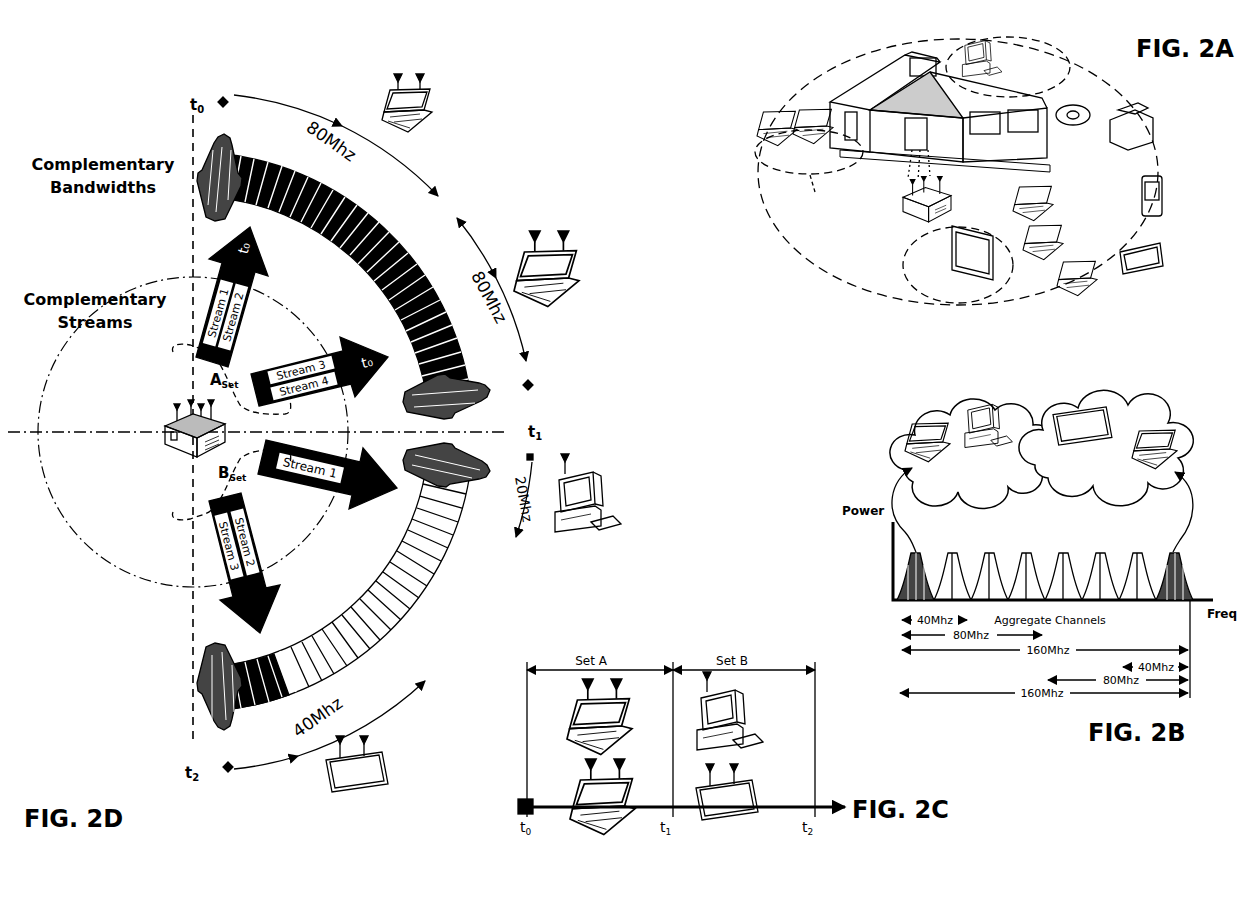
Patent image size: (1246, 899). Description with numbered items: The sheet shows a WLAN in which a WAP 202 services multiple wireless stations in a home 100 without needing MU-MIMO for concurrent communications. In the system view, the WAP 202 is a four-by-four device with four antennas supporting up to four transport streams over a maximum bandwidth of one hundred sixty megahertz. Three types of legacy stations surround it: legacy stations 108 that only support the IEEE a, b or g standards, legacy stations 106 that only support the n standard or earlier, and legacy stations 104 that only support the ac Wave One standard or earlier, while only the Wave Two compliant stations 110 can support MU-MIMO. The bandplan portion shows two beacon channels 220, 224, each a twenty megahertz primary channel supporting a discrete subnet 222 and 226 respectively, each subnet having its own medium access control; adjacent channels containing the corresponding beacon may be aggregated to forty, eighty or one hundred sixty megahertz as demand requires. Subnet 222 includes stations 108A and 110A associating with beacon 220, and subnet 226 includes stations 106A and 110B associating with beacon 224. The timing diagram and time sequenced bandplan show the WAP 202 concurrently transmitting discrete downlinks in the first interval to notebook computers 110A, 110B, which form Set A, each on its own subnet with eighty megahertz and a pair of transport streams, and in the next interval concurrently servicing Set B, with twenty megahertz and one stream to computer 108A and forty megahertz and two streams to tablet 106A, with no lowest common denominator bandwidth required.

In FIG. 2A, the home 100 is at (875, 80).
In FIG. 2A, the legacy stations (802.11ac Wave 1) 104 is at (903, 276).
In FIG. 2A, the legacy stations (802.11n) 106 is at (1160, 232).
In FIG. 2A, the legacy stations (802.11a/b/g) 108 is at (1070, 62).
In FIG. 2A, the stations (802.11ac Wave 2) 110 is at (785, 165).
In FIG. 2D, the WAP 202 is at (165, 425).
In FIG. 2A, the WAP 202 is at (910, 208).
In FIG. 2D, the beacon channel 220 is at (242, 132).
In FIG. 2B, the beacon channel 220 is at (916, 552).
In FIG. 2D, the beacon channel 224 is at (490, 390).
In FIG. 2B, the beacon channel 224 is at (1173, 552).
In FIG. 2B, the subnet 222 is at (930, 407).
In FIG. 2B, the subnet 226 is at (1146, 410).
In FIG. 2D, the tablet 106A is at (384, 778).
In FIG. 2C, the tablet 106A is at (754, 803).
In FIG. 2B, the tablet 106A is at (1078, 410).
In FIG. 2D, the computer 108A is at (592, 470).
In FIG. 2C, the computer 108A is at (741, 700).
In FIG. 2B, the computer 108A is at (1012, 399).
In FIG. 2D, the notebook computer 110A is at (428, 96).
In FIG. 2C, the notebook computer 110A is at (594, 716).
In FIG. 2B, the notebook computer 110A is at (916, 437).
In FIG. 2D, the notebook computer 110B is at (578, 260).
In FIG. 2C, the notebook computer 110B is at (595, 798).
In FIG. 2B, the notebook computer 110B is at (1172, 430).